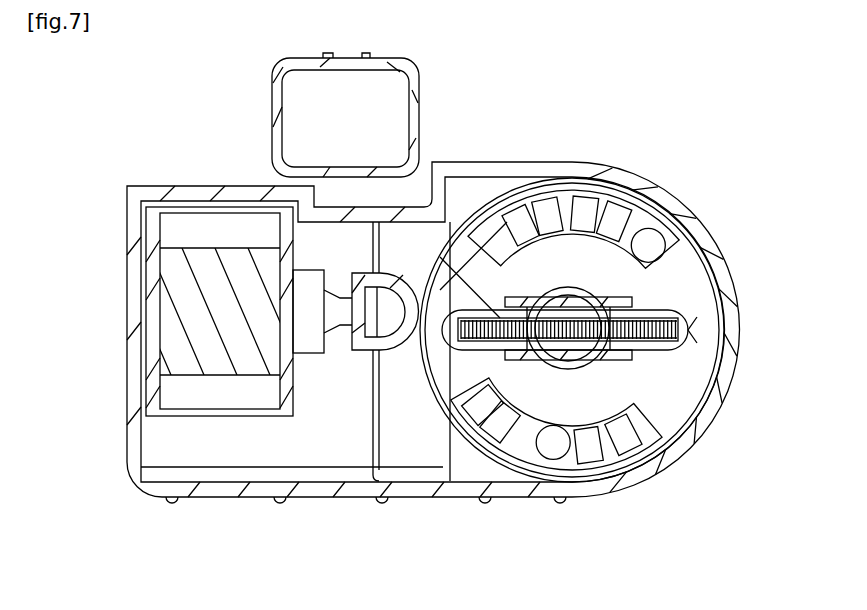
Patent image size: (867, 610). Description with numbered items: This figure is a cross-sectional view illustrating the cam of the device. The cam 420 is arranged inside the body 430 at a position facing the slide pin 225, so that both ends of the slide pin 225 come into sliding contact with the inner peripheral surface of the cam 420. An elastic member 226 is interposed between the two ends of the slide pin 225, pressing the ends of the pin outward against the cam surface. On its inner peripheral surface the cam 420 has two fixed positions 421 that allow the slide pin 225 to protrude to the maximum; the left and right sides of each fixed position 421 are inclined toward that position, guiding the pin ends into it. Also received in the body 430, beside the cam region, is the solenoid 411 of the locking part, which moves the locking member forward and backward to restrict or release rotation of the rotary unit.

The body 430 is at (177, 194).
The solenoid 411 is at (182, 298).
The fixed position 421 is at (452, 262).
The cam 420 is at (657, 222).
The slide pin 225 is at (452, 320).
The elastic member 226 is at (557, 320).